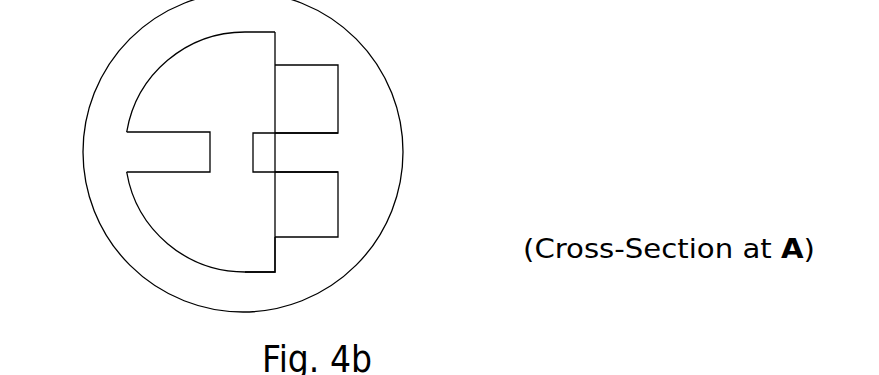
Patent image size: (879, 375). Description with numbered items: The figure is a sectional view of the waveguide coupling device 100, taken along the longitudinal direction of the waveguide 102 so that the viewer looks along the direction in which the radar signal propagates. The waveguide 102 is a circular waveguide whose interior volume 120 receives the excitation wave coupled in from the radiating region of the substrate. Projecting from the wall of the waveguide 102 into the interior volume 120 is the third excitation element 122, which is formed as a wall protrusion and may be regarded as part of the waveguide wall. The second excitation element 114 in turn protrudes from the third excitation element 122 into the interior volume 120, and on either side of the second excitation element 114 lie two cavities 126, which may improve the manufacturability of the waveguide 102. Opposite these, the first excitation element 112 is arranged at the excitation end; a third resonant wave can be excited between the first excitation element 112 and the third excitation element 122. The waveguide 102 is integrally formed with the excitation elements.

The waveguide coupling device 100 is at (587, 374).
The waveguide 102 is at (402, 120).
The first excitation element 112 is at (192, 148).
The second excitation element 114 is at (263, 152).
The interior volume 120 is at (248, 63).
The third excitation element 122 is at (305, 255).
The cavities 126 is at (310, 107).